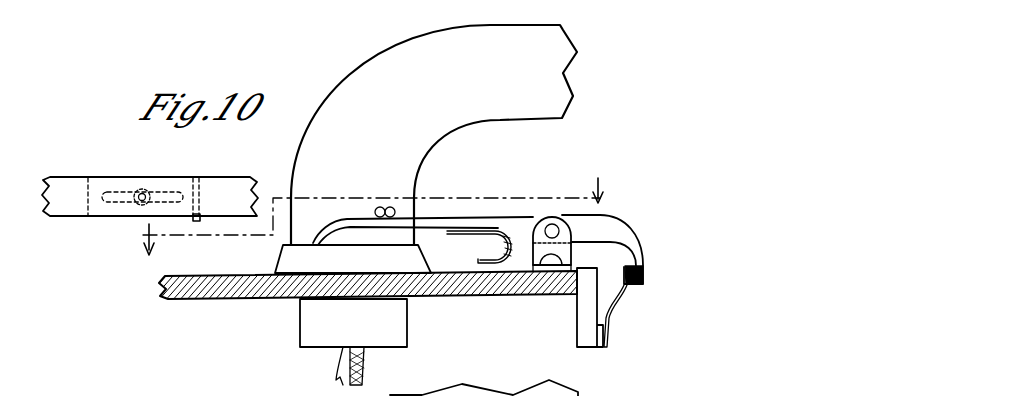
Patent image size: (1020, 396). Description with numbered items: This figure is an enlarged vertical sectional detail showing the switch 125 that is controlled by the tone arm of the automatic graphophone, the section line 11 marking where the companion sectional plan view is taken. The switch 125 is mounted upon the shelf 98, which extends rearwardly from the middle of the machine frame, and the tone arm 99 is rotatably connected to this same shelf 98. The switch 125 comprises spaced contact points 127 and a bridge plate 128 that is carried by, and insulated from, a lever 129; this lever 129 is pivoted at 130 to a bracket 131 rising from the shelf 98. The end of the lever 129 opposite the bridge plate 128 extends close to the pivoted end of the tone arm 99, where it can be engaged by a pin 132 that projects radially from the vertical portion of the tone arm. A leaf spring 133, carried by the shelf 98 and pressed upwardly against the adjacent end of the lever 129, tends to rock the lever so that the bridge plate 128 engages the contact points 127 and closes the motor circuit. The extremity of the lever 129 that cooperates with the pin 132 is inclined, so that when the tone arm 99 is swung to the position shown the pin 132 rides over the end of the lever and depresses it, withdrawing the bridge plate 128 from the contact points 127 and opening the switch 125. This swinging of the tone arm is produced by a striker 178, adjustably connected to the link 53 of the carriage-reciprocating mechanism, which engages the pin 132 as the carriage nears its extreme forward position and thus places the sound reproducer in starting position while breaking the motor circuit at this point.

The section line 11- 11 is at (375, 216).
The link 53 is at (65, 183).
The striker 178 is at (201, 219).
The shelf 98 is at (222, 278).
The tone arm 99 is at (412, 160).
The pin 132 is at (383, 207).
The leaf spring 133 is at (486, 232).
The pivot 130 is at (573, 224).
The lever 129 is at (630, 235).
The switch 125 is at (646, 301).
The bridge plate 128 is at (617, 310).
The bracket 131 is at (526, 259).
The contact points 127 is at (592, 348).